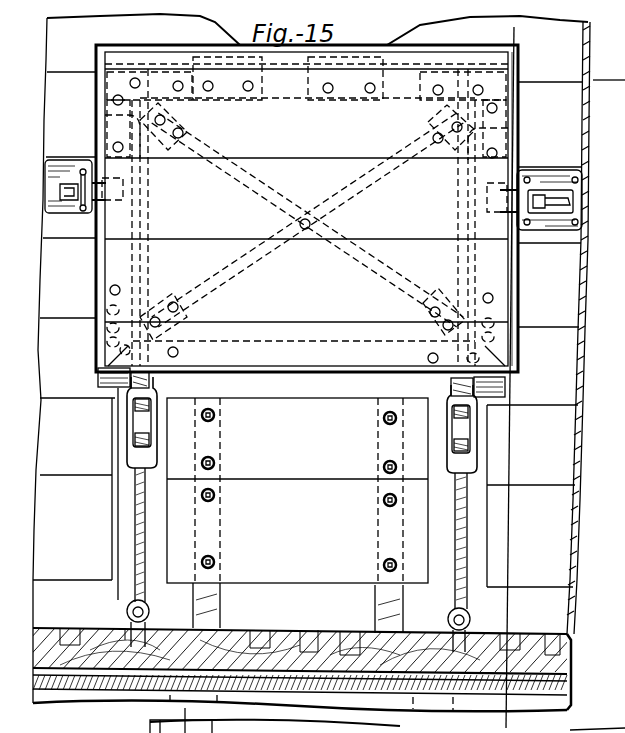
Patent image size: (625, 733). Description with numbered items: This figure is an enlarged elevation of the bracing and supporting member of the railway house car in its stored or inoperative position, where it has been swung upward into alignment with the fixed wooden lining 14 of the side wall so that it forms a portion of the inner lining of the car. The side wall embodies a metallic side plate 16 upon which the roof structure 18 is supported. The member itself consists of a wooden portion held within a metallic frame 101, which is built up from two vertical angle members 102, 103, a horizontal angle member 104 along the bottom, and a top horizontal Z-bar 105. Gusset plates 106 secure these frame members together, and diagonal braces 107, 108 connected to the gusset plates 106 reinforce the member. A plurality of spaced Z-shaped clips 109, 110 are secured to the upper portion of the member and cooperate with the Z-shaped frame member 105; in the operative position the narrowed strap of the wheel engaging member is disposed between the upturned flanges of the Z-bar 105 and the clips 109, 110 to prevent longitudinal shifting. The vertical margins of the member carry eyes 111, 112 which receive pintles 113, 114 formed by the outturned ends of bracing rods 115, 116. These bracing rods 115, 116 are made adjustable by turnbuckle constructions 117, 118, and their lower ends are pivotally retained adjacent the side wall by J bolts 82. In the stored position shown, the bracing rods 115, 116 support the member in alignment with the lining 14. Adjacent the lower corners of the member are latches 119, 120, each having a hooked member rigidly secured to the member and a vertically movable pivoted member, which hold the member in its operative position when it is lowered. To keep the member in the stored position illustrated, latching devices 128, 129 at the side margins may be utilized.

The wooden lining 14 is at (565, 297).
The metallic side plate 16 is at (514, 27).
The roof structure 18 is at (185, 708).
The J bolt 82 is at (128, 619).
The metallic frame 101 is at (157, 82).
The vertical angle member 102 is at (118, 260).
The vertical angle member 103 is at (488, 265).
The horizontal angle member 104 is at (270, 350).
The top horizontal Z-bar 105 is at (293, 93).
The gusset plate 106 is at (177, 105).
The diagonal brace 107 is at (265, 193).
The diagonal brace 108 is at (373, 190).
The Z-shaped clip 109 is at (212, 63).
The Z-shaped clip 110 is at (353, 90).
The eye 111 is at (112, 118).
The eye 112 is at (517, 115).
The pintle 113 is at (118, 125).
The pintle 114 is at (520, 125).
The bracing rod 115 is at (147, 531).
The bracing rod 116 is at (458, 565).
The turnbuckle construction 117 is at (142, 392).
The turnbuckle construction 118 is at (458, 398).
The latch 119 is at (108, 382).
The latch 120 is at (503, 393).
The latching device 128 is at (72, 208).
The latching device 129 is at (537, 223).